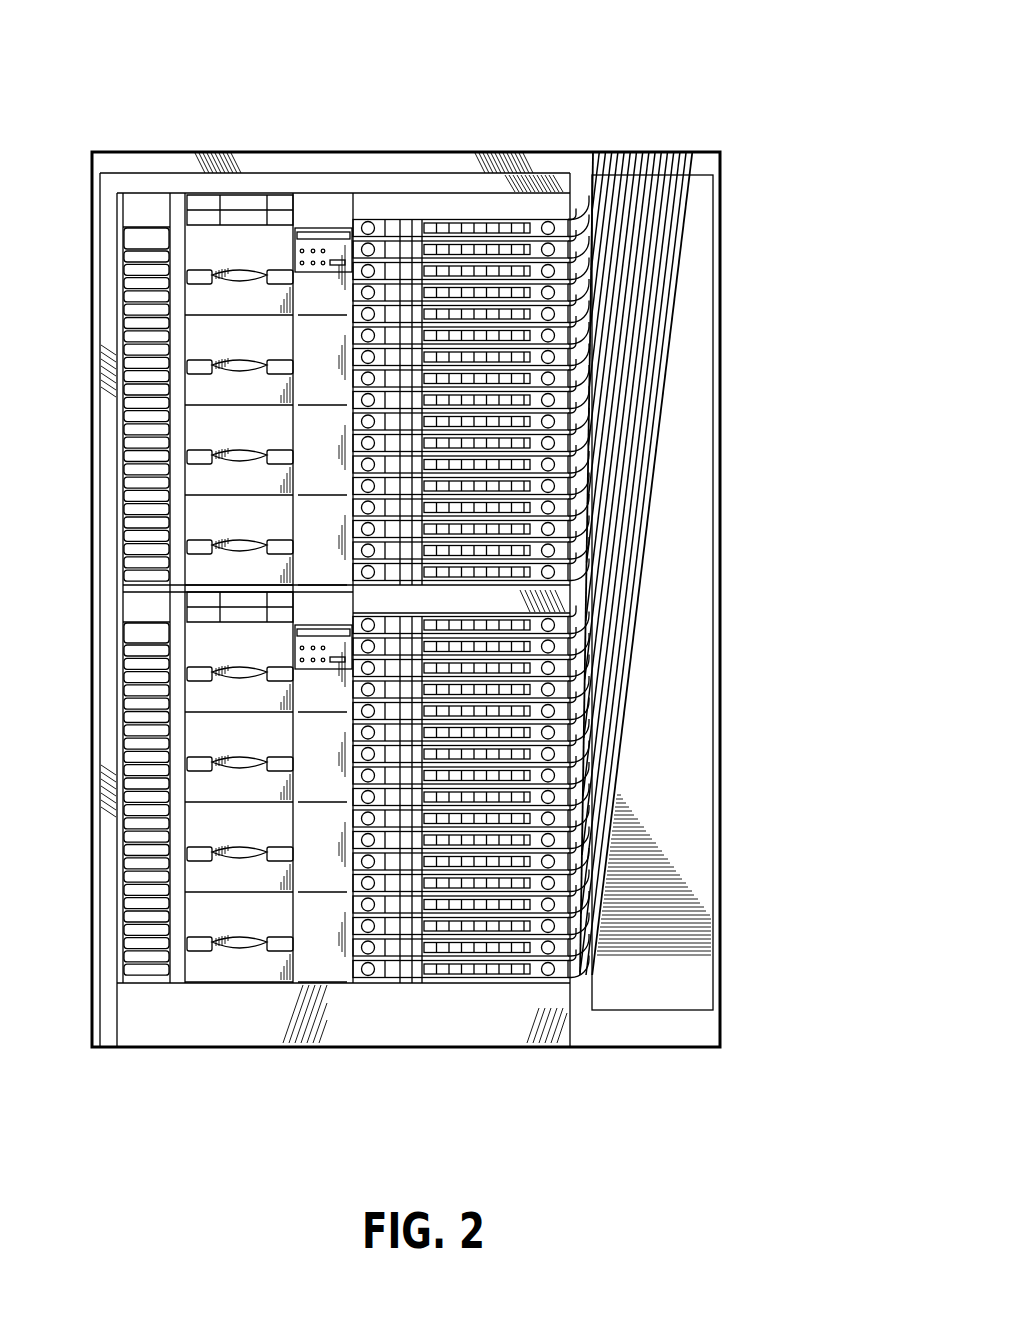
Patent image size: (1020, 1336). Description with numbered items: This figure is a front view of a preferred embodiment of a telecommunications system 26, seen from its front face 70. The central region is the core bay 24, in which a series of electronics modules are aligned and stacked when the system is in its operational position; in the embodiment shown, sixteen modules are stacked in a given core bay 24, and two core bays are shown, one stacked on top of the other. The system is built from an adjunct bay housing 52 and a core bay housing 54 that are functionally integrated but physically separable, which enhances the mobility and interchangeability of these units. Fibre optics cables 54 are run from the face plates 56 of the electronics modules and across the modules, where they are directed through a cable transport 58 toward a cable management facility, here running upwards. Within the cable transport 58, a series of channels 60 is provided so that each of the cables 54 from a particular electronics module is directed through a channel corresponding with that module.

The telecommunications system 26 is at (385, 100).
The front face 70 is at (455, 157).
The core bay 24 is at (557, 222).
The channels 60 is at (620, 188).
The core bay housing 54 is at (653, 370).
The cable transport 58 is at (688, 822).
The adjunct bay housing 52 is at (222, 1032).
The face plates 56 is at (528, 973).